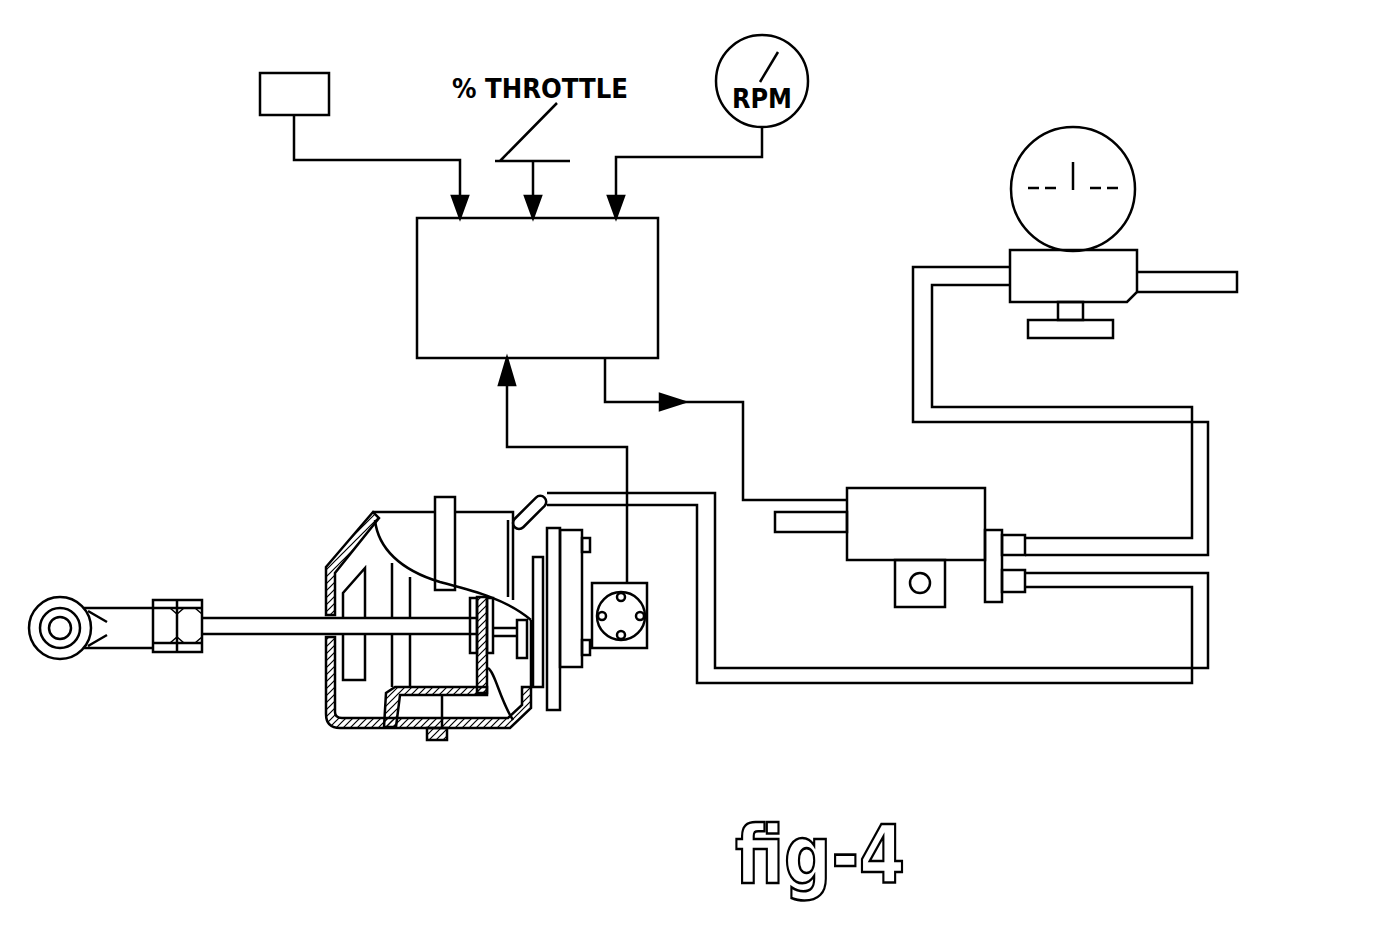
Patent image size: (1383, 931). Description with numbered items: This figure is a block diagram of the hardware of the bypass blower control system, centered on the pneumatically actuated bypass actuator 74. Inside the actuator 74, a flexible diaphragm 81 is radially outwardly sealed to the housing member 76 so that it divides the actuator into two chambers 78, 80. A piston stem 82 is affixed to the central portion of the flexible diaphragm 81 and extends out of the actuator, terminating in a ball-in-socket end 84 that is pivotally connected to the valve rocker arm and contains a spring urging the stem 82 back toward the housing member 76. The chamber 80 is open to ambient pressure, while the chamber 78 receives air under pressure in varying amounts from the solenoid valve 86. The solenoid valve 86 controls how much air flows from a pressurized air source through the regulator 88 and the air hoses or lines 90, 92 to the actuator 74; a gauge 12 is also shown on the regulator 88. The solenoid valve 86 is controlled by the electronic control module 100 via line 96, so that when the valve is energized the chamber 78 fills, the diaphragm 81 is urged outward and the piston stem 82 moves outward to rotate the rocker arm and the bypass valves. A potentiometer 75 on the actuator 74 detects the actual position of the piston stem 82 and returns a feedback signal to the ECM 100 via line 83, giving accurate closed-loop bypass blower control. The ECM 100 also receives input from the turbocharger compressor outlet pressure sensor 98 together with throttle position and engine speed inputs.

The pressure gauge 12 is at (1073, 189).
The bypass actuator 74 is at (395, 510).
The potentiometer 75 is at (622, 652).
The housing member 76 is at (435, 742).
The chamber 78 is at (478, 725).
The chamber 80 is at (433, 662).
The flexible diaphragm 81 is at (483, 707).
The piston stem 82 is at (250, 637).
The line 83 is at (505, 424).
The ball-in-socket end 84 is at (58, 598).
The solenoid valve 86 is at (985, 497).
The regulator 88 is at (1120, 250).
The air hose or line 90 is at (1158, 407).
The air hose or line 92 is at (1065, 688).
The line 96 is at (712, 402).
The turbocharger compressor outlet pressure sensor 98 is at (260, 95).
The electronic control module (ECM) 100 is at (658, 268).